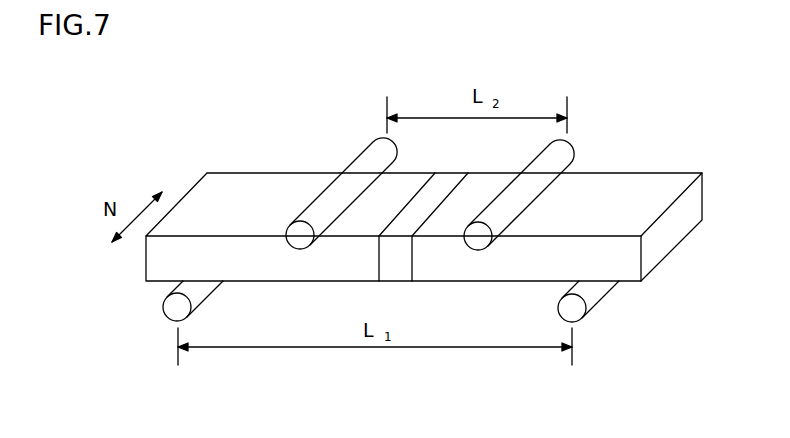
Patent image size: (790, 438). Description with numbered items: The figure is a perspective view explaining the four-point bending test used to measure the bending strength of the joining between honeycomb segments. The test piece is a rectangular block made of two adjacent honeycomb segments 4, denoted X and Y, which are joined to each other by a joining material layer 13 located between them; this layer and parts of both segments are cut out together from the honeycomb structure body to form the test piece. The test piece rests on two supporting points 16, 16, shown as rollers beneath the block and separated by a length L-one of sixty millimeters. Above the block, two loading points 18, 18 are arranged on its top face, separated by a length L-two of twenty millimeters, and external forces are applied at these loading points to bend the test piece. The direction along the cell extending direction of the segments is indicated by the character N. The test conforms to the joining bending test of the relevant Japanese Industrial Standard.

The honeycomb segment 4 is at (243, 197).
The joining material layer 13 is at (396, 263).
The supporting point 16 is at (173, 309).
The loading point 18 is at (362, 160).